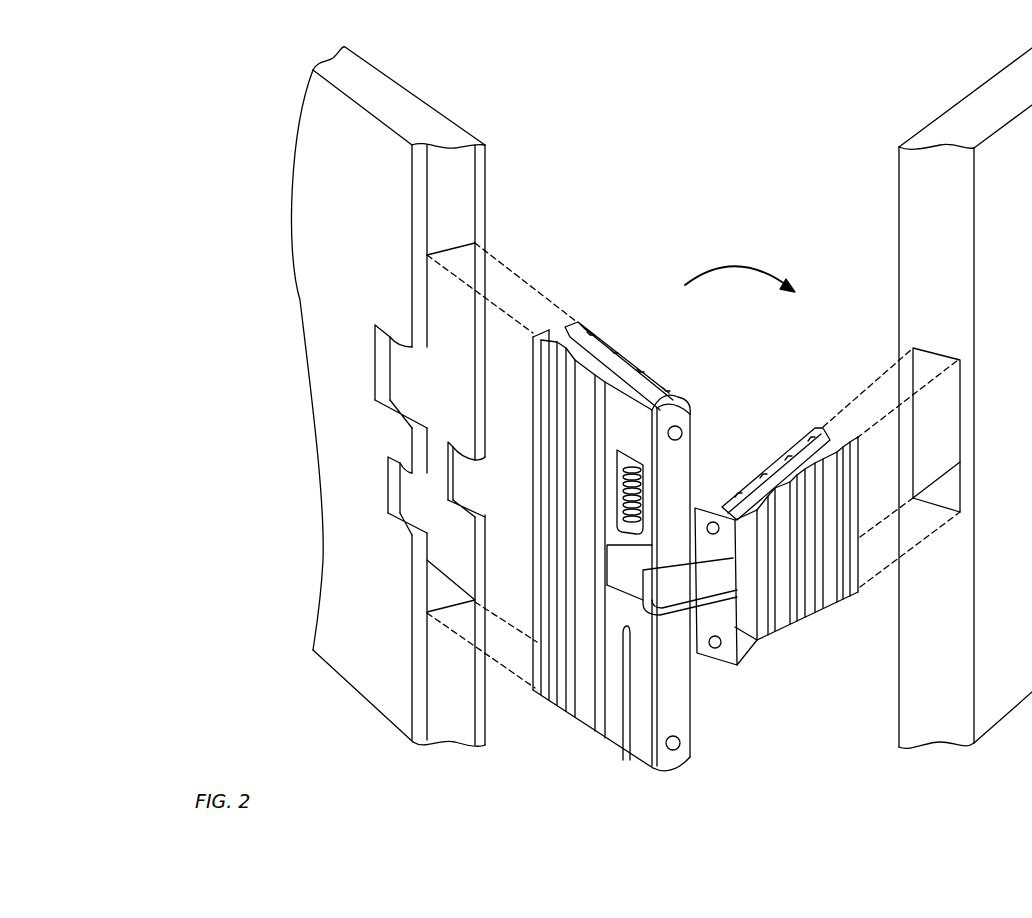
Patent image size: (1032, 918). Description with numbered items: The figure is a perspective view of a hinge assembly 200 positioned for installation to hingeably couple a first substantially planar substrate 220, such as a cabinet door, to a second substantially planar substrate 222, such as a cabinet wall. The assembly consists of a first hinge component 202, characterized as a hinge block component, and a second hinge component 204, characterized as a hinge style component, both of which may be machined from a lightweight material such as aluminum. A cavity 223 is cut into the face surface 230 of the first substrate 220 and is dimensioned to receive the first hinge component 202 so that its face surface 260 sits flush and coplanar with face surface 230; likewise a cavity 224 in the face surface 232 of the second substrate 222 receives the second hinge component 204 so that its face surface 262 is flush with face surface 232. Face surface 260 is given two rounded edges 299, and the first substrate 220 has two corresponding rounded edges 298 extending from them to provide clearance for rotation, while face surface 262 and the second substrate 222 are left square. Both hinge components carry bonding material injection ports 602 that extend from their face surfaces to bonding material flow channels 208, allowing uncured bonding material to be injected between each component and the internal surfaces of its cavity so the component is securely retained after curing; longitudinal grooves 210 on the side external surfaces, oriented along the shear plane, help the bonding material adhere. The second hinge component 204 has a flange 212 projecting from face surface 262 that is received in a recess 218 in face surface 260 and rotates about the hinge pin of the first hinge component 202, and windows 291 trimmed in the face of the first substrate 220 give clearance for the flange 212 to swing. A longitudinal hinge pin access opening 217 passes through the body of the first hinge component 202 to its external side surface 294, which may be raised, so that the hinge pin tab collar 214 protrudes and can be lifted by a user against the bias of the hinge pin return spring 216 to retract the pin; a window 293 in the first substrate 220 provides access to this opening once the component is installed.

The hinge assembly 200 is at (784, 66).
The first hinge component 202 is at (582, 328).
The second hinge component 204 is at (768, 455).
The bonding material flow channels 208 is at (582, 332).
The longitudinal grooves 210 is at (667, 390).
The flange 212 is at (725, 550).
The hinge pin tab collar 214 is at (670, 546).
The hinge pin return spring 216 is at (645, 487).
The longitudinal hinge pin access opening 217 is at (680, 407).
The recess 218 is at (613, 572).
The first substantially planar substrate 220 is at (393, 92).
The second substantially planar substrate 222 is at (987, 102).
The cavity 223 is at (468, 263).
The cavity 224 is at (920, 368).
The face surface 230 is at (457, 190).
The face surface 232 is at (908, 198).
The face surface 260 is at (666, 540).
The face surface 262 is at (723, 590).
The windows 291 is at (470, 473).
The window 293 is at (403, 372).
The external side surface 294 is at (653, 468).
The rounded edges 298 is at (488, 148).
The rounded edges 299 is at (718, 398).
The bonding material injection ports 602 is at (682, 431).